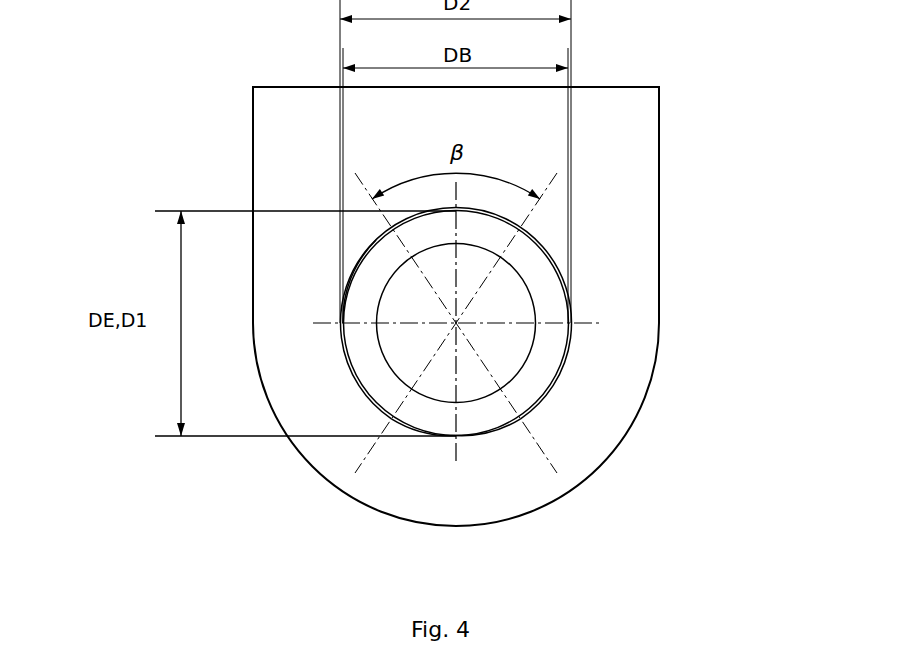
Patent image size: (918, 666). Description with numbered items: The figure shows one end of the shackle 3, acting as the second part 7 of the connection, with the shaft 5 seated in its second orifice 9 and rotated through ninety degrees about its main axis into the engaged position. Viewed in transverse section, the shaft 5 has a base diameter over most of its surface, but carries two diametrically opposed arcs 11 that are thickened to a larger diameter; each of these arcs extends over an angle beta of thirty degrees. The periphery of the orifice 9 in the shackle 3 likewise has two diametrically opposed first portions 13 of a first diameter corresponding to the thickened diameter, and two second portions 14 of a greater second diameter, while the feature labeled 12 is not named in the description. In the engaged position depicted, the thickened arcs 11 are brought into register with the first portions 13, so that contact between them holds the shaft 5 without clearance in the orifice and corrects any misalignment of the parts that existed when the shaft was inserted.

The shackle 3 is at (630, 175).
The second part 7 is at (633, 228).
The shaft 5 is at (540, 303).
The second orifice 9 is at (557, 385).
The diametrically opposed arcs 11 is at (498, 432).
The sleeve wall 12 is at (357, 268).
The first portions 13 is at (417, 435).
The second portions 14 is at (340, 334).